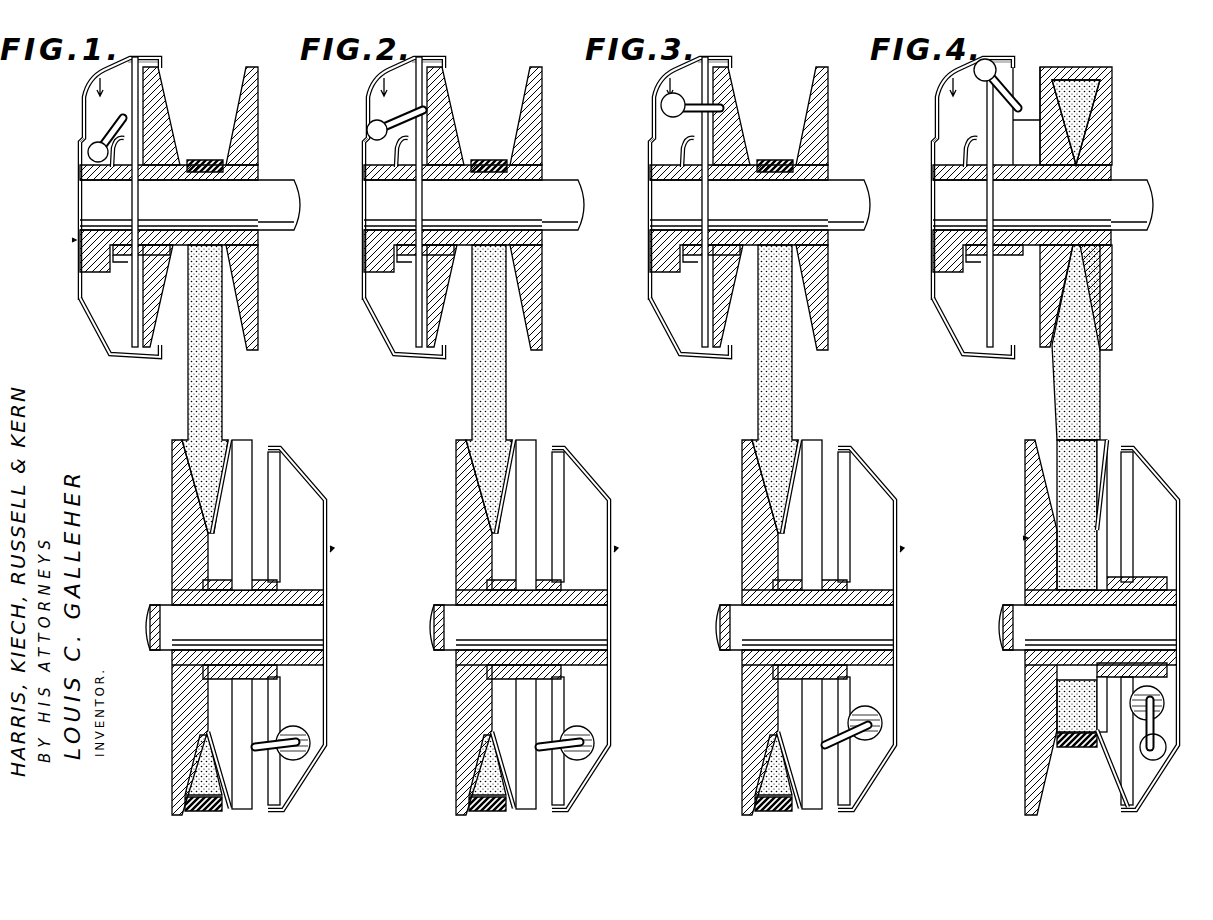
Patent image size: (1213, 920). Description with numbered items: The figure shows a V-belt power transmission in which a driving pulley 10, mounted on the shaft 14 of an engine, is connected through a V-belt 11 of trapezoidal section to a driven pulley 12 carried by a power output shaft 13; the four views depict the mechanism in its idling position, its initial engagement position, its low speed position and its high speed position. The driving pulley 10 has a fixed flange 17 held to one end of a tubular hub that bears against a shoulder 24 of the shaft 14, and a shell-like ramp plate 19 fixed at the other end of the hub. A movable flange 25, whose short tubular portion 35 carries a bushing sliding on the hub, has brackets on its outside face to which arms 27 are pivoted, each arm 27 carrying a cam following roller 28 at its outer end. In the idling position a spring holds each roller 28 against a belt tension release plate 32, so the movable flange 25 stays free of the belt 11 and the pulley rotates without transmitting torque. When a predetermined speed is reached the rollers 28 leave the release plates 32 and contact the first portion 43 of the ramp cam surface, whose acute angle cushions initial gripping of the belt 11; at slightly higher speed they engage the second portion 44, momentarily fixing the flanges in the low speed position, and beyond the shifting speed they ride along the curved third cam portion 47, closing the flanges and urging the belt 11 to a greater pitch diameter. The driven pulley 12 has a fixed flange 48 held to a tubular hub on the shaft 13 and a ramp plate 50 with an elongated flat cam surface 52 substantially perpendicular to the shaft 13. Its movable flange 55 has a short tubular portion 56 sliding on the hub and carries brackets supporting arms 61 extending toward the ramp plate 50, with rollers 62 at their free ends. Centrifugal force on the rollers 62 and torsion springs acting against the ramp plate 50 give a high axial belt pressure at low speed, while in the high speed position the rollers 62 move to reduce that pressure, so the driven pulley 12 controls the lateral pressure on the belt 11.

In FIG. 1, the driving pulley 10 is at (72, 240).
In FIG. 1, the V-belt 11 is at (224, 392).
In FIG. 2, the V-belt 11 is at (489, 488).
In FIG. 3, the V-belt 11 is at (799, 485).
In FIG. 4, the V-belt 11 is at (1100, 429).
In FIG. 1, the driven pulley 12 is at (332, 548).
In FIG. 2, the driven pulley 12 is at (642, 532).
In FIG. 3, the driven pulley 12 is at (928, 532).
In FIG. 4, the driven pulley 12 is at (996, 543).
In FIG. 1, the power output shaft 13 is at (300, 617).
In FIG. 2, the power output shaft 13 is at (537, 627).
In FIG. 3, the power output shaft 13 is at (823, 627).
In FIG. 4, the power output shaft 13 is at (1085, 614).
In FIG. 1, the shaft 14 is at (268, 188).
In FIG. 2, the shaft 14 is at (474, 187).
In FIG. 3, the shaft 14 is at (760, 187).
In FIG. 4, the shaft 14 is at (1043, 187).
In FIG. 1, the fixed flange 17 is at (252, 117).
In FIG. 2, the fixed flange 17 is at (545, 208).
In FIG. 3, the fixed flange 17 is at (831, 208).
In FIG. 4, the fixed flange 17 is at (1076, 208).
In FIG. 1, the ramp plate 19 is at (100, 342).
In FIG. 2, the ramp plate 19 is at (391, 331).
In FIG. 3, the ramp plate 19 is at (677, 331).
In FIG. 4, the ramp plate 19 is at (964, 331).
In FIG. 1, the shoulder 24 is at (258, 233).
In FIG. 2, the shoulder 24 is at (475, 218).
In FIG. 3, the shoulder 24 is at (761, 218).
In FIG. 4, the shoulder 24 is at (1041, 218).
In FIG. 1, the movable flange 25 is at (158, 112).
In FIG. 2, the movable flange 25 is at (455, 202).
In FIG. 3, the movable flange 25 is at (741, 202).
In FIG. 4, the movable flange 25 is at (1014, 207).
In FIG. 1, the arm 27 is at (96, 145).
In FIG. 2, the arm 27 is at (422, 106).
In FIG. 3, the arm 27 is at (702, 73).
In FIG. 4, the arm 27 is at (1014, 70).
In FIG. 1, the cam following roller 28 is at (96, 160).
In FIG. 2, the cam following roller 28 is at (354, 145).
In FIG. 1, the belt tension release plate 32 is at (128, 145).
In FIG. 2, the belt tension release plate 32 is at (445, 144).
In FIG. 3, the belt tension release plate 32 is at (648, 154).
In FIG. 4, the belt tension release plate 32 is at (936, 152).
In FIG. 1, the short tubular portion 35 is at (125, 262).
In FIG. 2, the short tubular portion 35 is at (419, 276).
In FIG. 3, the short tubular portion 35 is at (705, 276).
In FIG. 1, the first portion of ramp cam surface 43 is at (80, 134).
In FIG. 2, the first portion of ramp cam surface 43 is at (345, 134).
In FIG. 3, the first portion of ramp cam surface 43 is at (627, 139).
In FIG. 4, the first portion of ramp cam surface 43 is at (912, 128).
In FIG. 1, the second portion of ramp cam surface 44 is at (96, 97).
In FIG. 2, the second portion of ramp cam surface 44 is at (381, 179).
In FIG. 3, the second portion of ramp cam surface 44 is at (667, 179).
In FIG. 4, the second portion of ramp cam surface 44 is at (950, 179).
In FIG. 1, the curved third cam portion 47 is at (120, 78).
In FIG. 2, the curved third cam portion 47 is at (387, 75).
In FIG. 3, the curved third cam portion 47 is at (673, 75).
In FIG. 4, the curved third cam portion 47 is at (952, 74).
In FIG. 1, the fixed flange 48 is at (184, 752).
In FIG. 2, the fixed flange 48 is at (513, 627).
In FIG. 3, the fixed flange 48 is at (799, 627).
In FIG. 4, the fixed flange 48 is at (1078, 627).
In FIG. 1, the ramp plate 50 is at (300, 470).
In FIG. 2, the ramp plate 50 is at (596, 629).
In FIG. 3, the ramp plate 50 is at (882, 629).
In FIG. 4, the ramp plate 50 is at (1152, 622).
In FIG. 1, the flat cam surface 52 is at (312, 690).
In FIG. 2, the flat cam surface 52 is at (603, 628).
In FIG. 3, the flat cam surface 52 is at (844, 628).
In FIG. 4, the flat cam surface 52 is at (1127, 628).
In FIG. 1, the movable flange 55 is at (192, 778).
In FIG. 2, the movable flange 55 is at (476, 624).
In FIG. 3, the movable flange 55 is at (762, 624).
In FIG. 4, the movable flange 55 is at (1094, 624).
In FIG. 1, the short tubular portion 56 is at (266, 580).
In FIG. 2, the short tubular portion 56 is at (540, 609).
In FIG. 3, the short tubular portion 56 is at (826, 609).
In FIG. 4, the short tubular portion 56 is at (1132, 608).
In FIG. 1, the arm 61 is at (302, 760).
In FIG. 2, the arm 61 is at (586, 764).
In FIG. 3, the arm 61 is at (878, 742).
In FIG. 4, the arm 61 is at (1163, 753).
In FIG. 1, the roller 62 is at (306, 737).
In FIG. 2, the roller 62 is at (607, 743).
In FIG. 3, the roller 62 is at (894, 723).
In FIG. 4, the roller 62 is at (1122, 734).